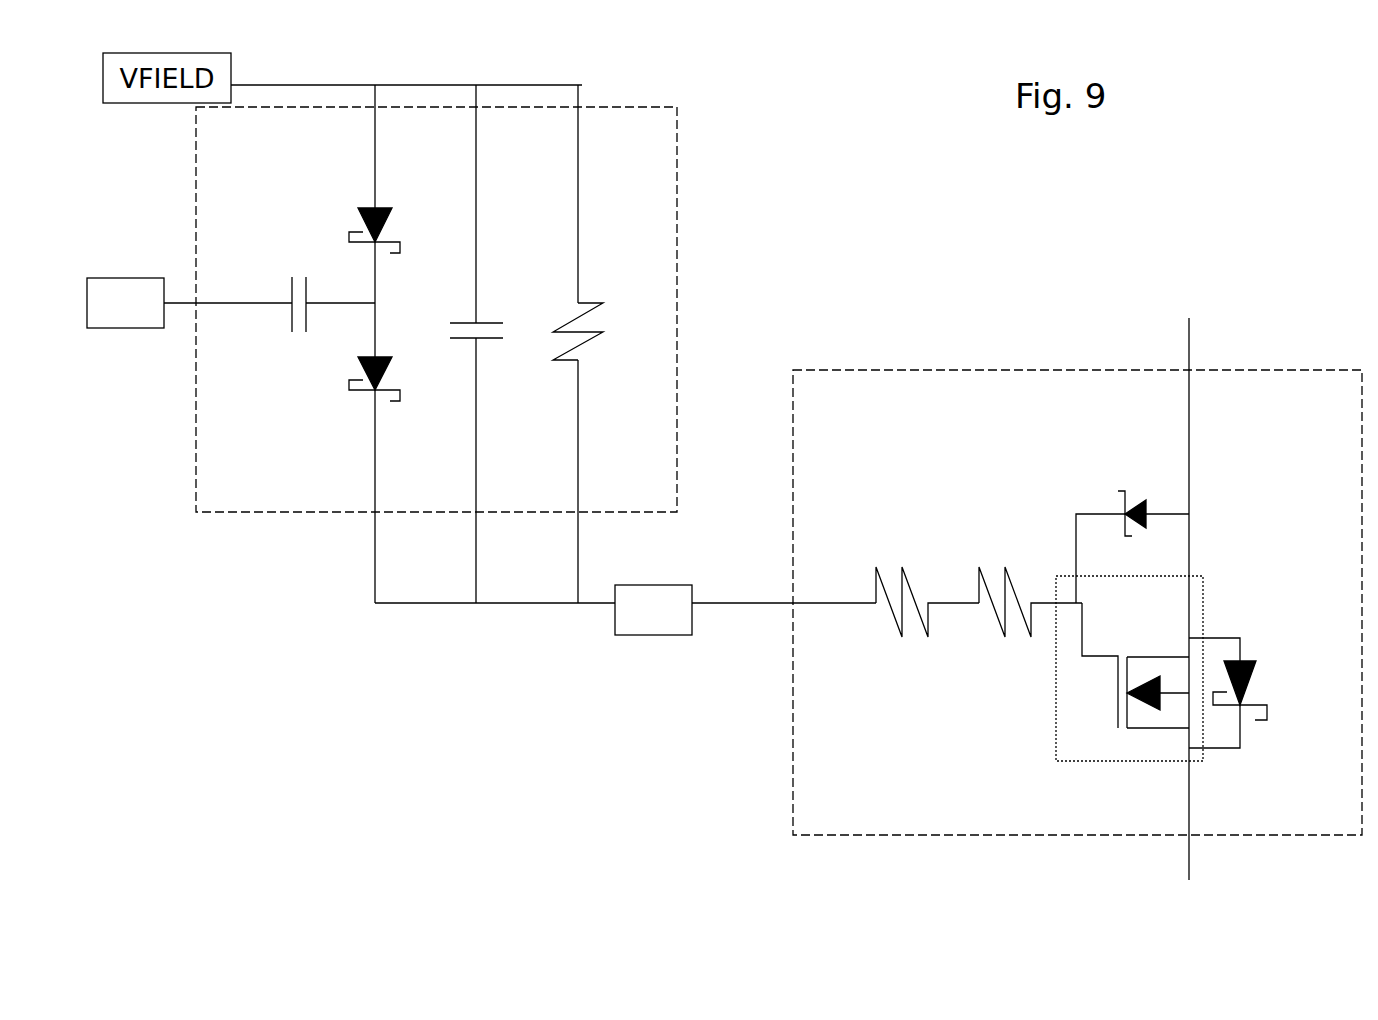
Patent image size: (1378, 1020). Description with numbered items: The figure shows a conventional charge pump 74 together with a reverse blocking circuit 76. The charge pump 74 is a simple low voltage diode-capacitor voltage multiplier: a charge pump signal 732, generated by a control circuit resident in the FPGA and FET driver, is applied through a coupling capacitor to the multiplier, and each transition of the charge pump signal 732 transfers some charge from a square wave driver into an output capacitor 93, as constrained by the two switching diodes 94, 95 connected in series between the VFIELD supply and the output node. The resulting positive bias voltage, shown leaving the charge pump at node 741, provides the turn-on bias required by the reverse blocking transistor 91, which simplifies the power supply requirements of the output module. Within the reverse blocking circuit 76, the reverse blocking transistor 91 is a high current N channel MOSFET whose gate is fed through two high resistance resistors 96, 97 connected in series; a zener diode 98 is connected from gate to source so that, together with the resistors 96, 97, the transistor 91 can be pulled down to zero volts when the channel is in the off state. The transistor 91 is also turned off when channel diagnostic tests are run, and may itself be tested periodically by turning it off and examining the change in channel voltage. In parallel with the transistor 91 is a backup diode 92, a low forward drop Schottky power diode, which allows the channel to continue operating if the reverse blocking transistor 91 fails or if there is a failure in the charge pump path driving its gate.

The charge pump 74 is at (635, 108).
The charge pump signal 732 is at (125, 303).
The output node 741 is at (653, 610).
The output capacitor 93 is at (498, 300).
The switching diode 94 is at (403, 222).
The switching diode 95 is at (392, 375).
The reverse blocking circuit 76 is at (897, 370).
The high resistance resistor 96 is at (877, 543).
The high resistance resistor 97 is at (993, 543).
The zener diode 98 is at (1138, 478).
The reverse blocking transistor 91 is at (1045, 713).
The backup diode 92 is at (1244, 616).